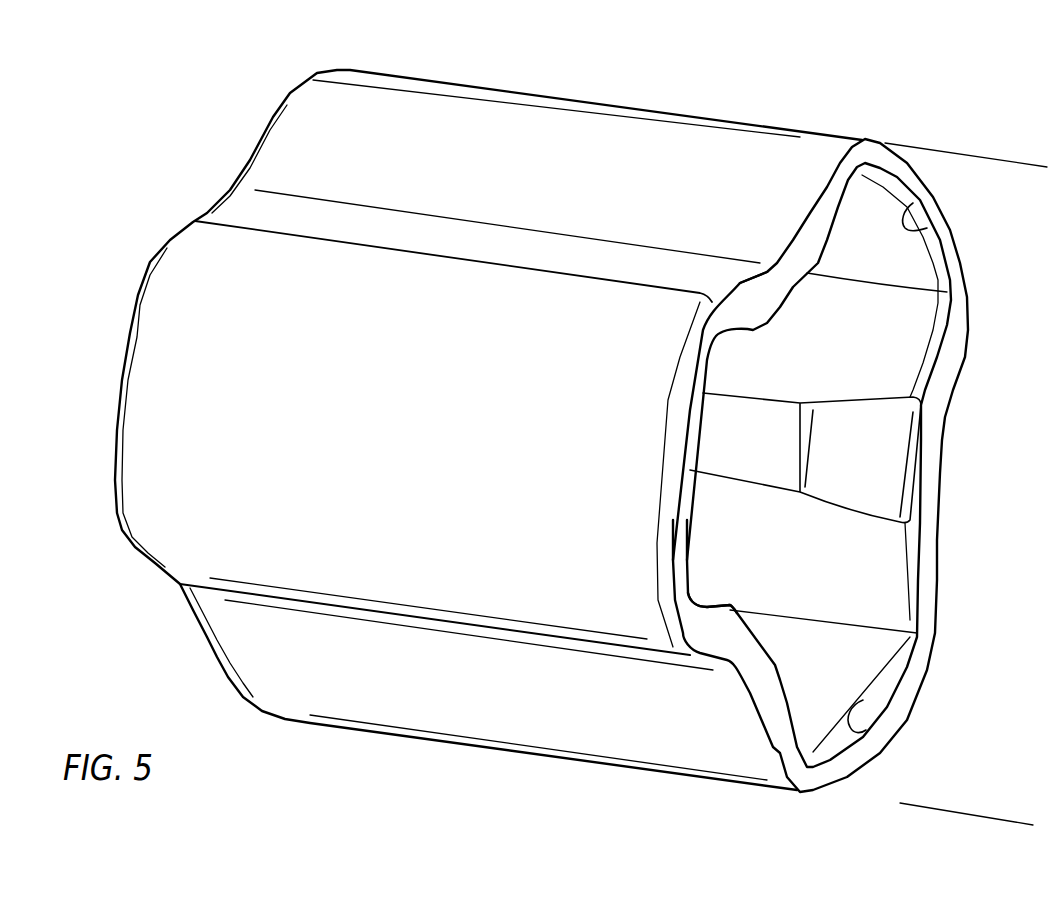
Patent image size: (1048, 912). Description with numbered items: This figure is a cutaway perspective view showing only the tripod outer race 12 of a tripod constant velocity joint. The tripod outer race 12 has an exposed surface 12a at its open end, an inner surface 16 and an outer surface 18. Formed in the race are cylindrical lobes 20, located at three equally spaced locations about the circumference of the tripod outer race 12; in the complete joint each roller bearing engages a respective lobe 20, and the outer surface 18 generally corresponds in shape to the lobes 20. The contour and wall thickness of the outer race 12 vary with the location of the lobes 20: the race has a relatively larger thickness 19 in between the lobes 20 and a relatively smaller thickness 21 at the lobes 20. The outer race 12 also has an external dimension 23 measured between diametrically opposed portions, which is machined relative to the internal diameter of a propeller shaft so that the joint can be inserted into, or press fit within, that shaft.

The tripod outer race 12 is at (532, 60).
The exposed surface 12a is at (933, 420).
The inner surface 16 is at (747, 620).
The outer surface 18 is at (512, 738).
The relatively larger thickness 19 is at (750, 237).
The cylindrical lobes 20 is at (927, 228).
The relatively smaller thickness 21 is at (725, 541).
The external dimension 23 is at (972, 815).